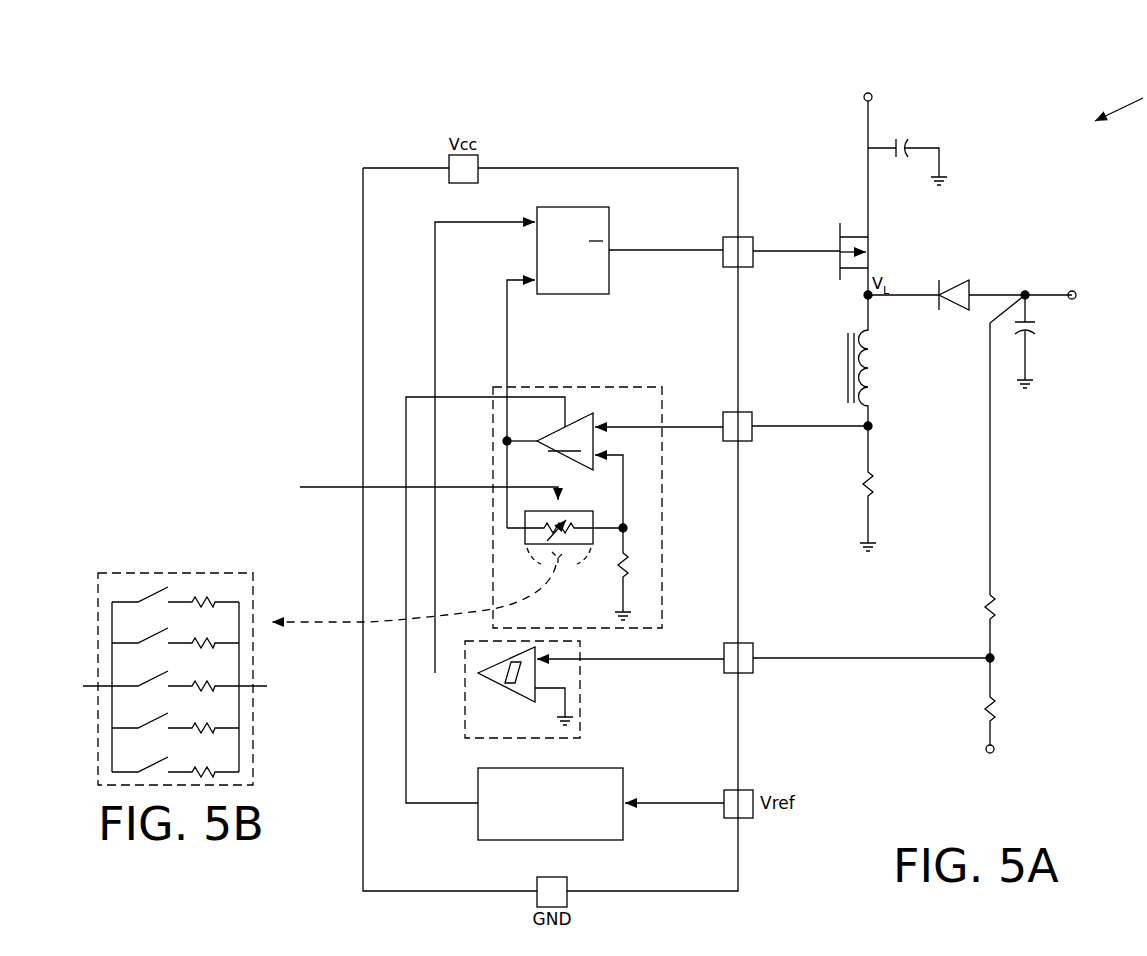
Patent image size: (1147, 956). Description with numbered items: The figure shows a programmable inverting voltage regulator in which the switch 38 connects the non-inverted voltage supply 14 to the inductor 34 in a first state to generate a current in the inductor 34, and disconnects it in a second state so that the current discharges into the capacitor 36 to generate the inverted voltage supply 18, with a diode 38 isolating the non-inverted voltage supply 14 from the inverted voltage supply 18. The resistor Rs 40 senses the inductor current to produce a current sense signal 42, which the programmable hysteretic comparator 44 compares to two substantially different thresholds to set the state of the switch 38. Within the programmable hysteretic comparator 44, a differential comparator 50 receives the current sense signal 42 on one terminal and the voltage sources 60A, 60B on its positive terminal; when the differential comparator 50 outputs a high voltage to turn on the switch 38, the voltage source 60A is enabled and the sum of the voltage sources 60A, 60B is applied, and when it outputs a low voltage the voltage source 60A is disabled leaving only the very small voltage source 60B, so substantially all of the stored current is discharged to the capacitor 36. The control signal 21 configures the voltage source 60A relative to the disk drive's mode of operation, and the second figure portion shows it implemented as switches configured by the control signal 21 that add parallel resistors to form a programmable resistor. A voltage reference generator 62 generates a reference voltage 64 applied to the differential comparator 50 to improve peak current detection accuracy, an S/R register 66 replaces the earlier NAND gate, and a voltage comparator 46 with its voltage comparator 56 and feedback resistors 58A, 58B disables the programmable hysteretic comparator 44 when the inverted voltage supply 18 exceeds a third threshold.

The non-inverted voltage supply 14 is at (871, 119).
The inverted voltage supply 18 is at (1052, 290).
The control signal 21 is at (334, 485).
The inductor 34 is at (903, 378).
The capacitor 36 is at (1048, 332).
The switch 38 is at (828, 219).
The resistor Rs 40 is at (903, 491).
The current sense signal 42 is at (800, 433).
The programmable hysteretic comparator 44 is at (608, 484).
The voltage comparator 46 is at (507, 704).
The differential comparator 50 is at (548, 441).
The voltage comparator 56 is at (500, 692).
The feedback resistor 58A is at (1010, 612).
The feedback resistor 58B is at (1010, 708).
The programmable voltage source 60A is at (570, 511).
The voltage source 60B is at (608, 573).
The voltage reference generator 62 is at (555, 841).
The reference voltage 64 is at (440, 804).
The S/R register 66 is at (585, 207).